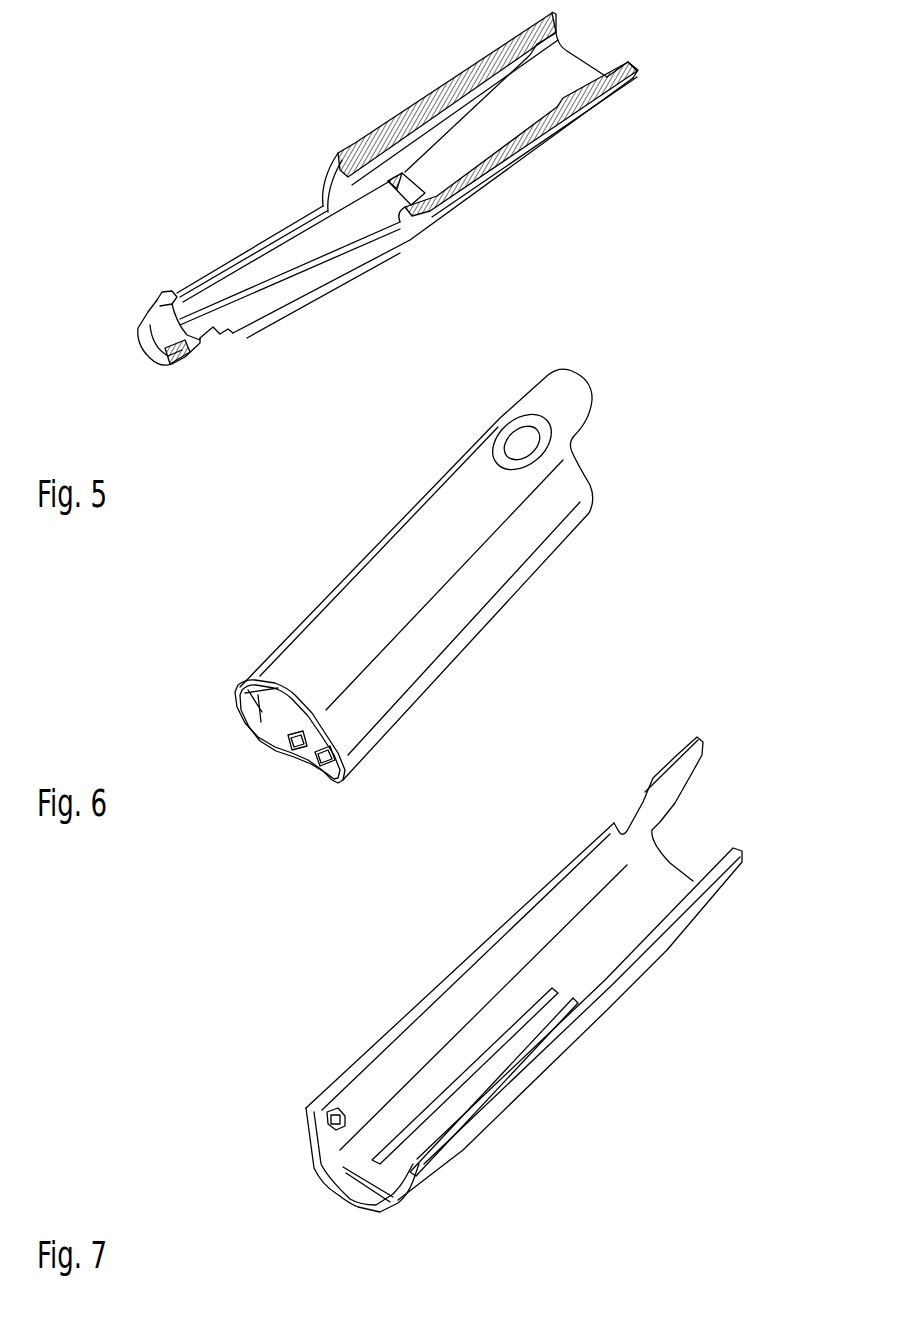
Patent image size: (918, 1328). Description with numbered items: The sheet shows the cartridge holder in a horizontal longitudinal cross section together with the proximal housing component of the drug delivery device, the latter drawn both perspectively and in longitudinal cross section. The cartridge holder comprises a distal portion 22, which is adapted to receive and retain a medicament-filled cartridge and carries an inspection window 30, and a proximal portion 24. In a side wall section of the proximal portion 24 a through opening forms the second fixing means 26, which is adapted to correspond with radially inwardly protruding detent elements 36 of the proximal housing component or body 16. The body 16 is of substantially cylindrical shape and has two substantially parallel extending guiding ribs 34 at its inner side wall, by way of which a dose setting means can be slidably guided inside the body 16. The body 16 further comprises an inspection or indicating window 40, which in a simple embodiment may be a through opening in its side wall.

In FIG. 6, the proximal housing component 16 is at (413, 550).
In FIG. 7, the proximal housing component 16 is at (525, 942).
In FIG. 5, the distal portion 22 is at (280, 277).
In FIG. 5, the proximal portion 24 is at (575, 72).
In FIG. 5, the second fixing means 26 is at (402, 178).
In FIG. 5, the inspection window 30 is at (275, 238).
In FIG. 7, the guiding ribs 34 is at (427, 1102).
In FIG. 6, the detent elements 36 is at (290, 750).
In FIG. 7, the detent elements 36 is at (321, 1114).
In FIG. 6, the indicating window 40 is at (522, 443).
In FIG. 7, the indicating window 40 is at (625, 817).